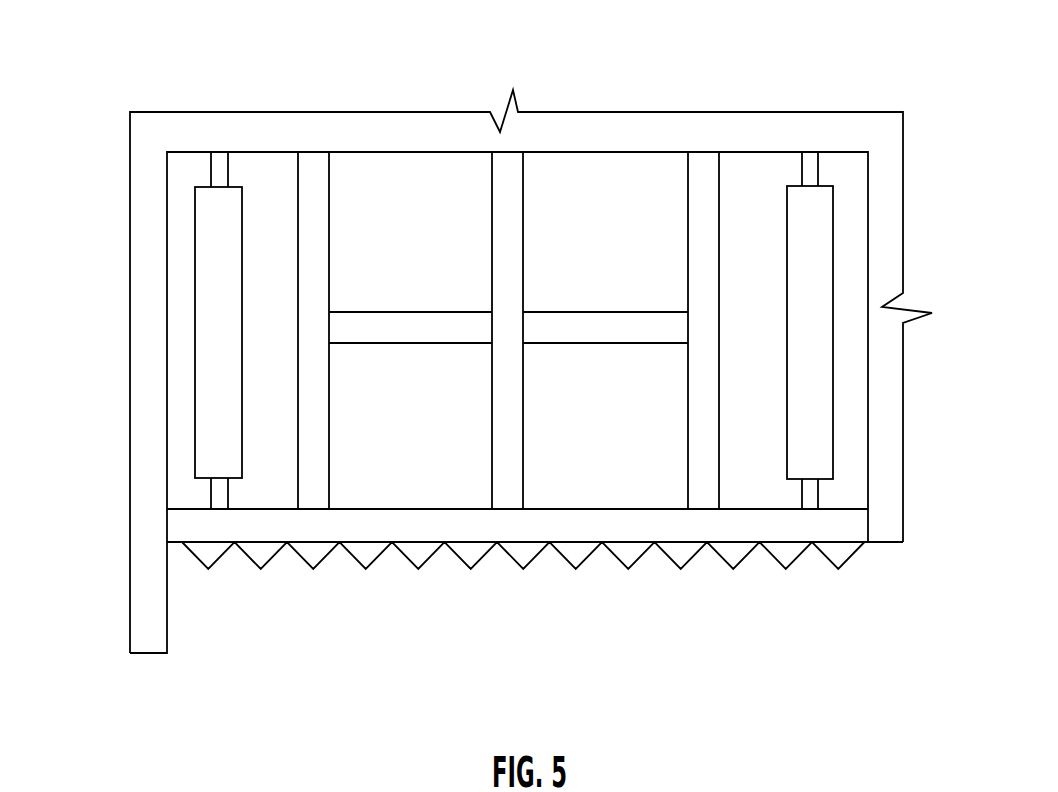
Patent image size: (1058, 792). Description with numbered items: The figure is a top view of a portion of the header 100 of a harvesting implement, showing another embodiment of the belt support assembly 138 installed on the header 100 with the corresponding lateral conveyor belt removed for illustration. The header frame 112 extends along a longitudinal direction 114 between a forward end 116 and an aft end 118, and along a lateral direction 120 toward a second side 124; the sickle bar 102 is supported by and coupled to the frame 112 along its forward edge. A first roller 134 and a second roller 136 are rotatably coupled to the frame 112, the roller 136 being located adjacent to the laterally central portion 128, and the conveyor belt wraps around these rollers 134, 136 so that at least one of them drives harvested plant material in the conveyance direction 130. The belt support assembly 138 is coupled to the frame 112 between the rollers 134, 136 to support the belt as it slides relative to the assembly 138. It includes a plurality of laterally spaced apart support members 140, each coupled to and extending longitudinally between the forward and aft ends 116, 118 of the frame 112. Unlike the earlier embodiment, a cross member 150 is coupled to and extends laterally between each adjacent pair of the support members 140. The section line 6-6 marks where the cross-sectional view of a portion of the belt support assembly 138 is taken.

The header 100 is at (128, 57).
The sickle bar 102 is at (418, 570).
The header frame 112 is at (771, 133).
The longitudinal direction 114 is at (943, 150).
The forward end 116 is at (300, 623).
The aft end 118 is at (237, 80).
The lateral direction 120 is at (448, 643).
The second side 124 is at (96, 264).
The laterally central portion 128 is at (915, 483).
The conveyance direction 130 is at (872, 625).
The roller 134 is at (206, 430).
The roller 136 is at (807, 407).
The belt support assembly 138 is at (588, 485).
The support members 140 is at (505, 193).
The cross member 150 is at (367, 343).
The line 6- 6 is at (478, 370).